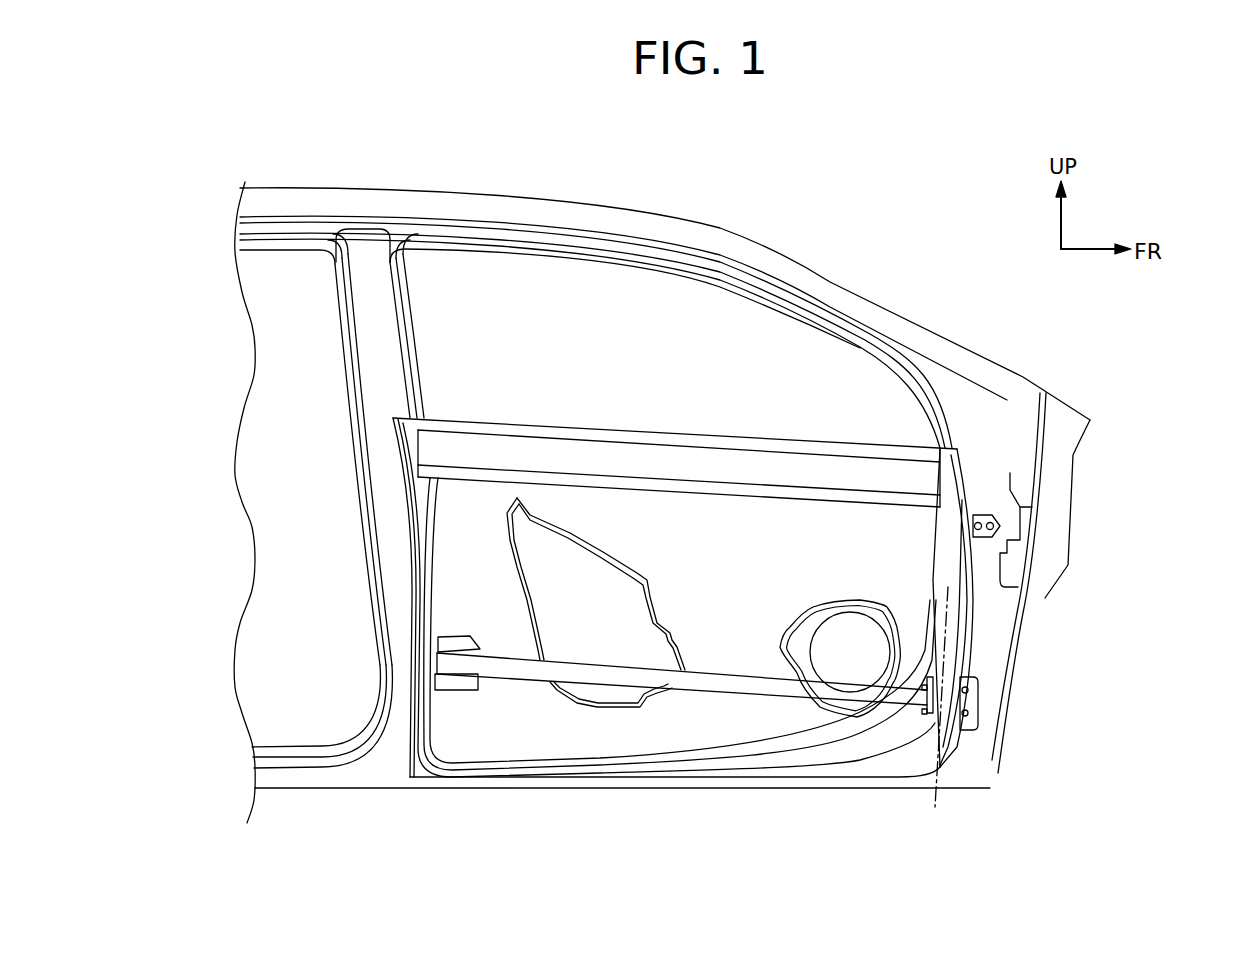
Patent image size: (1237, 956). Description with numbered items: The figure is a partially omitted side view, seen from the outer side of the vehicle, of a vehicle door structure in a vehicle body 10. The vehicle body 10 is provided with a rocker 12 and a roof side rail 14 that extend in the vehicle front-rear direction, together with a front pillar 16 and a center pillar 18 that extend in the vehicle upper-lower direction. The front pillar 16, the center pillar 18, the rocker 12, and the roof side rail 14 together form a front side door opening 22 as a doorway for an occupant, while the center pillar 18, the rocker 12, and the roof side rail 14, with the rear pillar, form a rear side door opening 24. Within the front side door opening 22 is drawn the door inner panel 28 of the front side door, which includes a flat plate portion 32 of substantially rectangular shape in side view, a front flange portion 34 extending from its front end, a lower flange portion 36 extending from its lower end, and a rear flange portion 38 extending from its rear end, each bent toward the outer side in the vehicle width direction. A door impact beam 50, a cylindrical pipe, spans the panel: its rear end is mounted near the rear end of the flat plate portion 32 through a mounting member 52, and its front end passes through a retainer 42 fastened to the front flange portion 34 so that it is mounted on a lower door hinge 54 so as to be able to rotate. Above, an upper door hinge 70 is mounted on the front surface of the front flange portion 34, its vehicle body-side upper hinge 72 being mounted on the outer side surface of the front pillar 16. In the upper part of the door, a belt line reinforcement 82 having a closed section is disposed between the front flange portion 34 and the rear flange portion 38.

The vehicle body 10 is at (822, 262).
The rocker 12 is at (380, 770).
The roof side rail 14 is at (555, 213).
The front pillar 16 is at (1000, 641).
The center pillar 18 is at (372, 346).
The front side door opening 22 is at (432, 375).
The rear side door opening 24 is at (362, 522).
The door inner panel 28 is at (684, 421).
The flat plate portion 32 is at (604, 518).
The front flange portion 34 is at (972, 600).
The lower flange portion 36 is at (691, 780).
The rear flange portion 38 is at (418, 612).
The retainer 42 is at (893, 740).
The door impact beam 50 is at (584, 662).
The mounting member 52 is at (456, 688).
The lower door hinge 54 is at (981, 702).
The upper door hinge 70 is at (985, 508).
The vehicle body-side upper hinge 72 is at (1002, 527).
The belt line reinforcement 82 is at (793, 465).